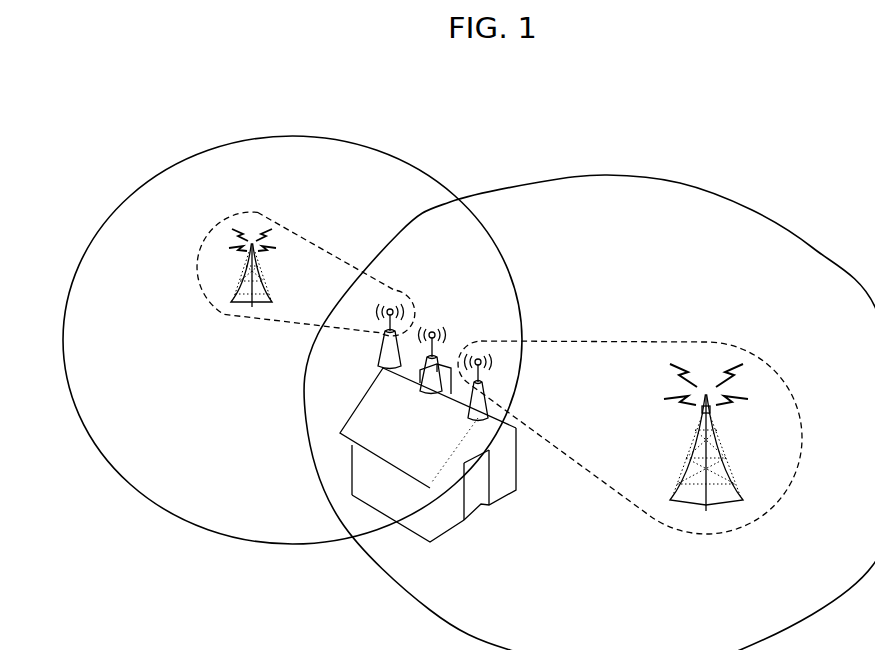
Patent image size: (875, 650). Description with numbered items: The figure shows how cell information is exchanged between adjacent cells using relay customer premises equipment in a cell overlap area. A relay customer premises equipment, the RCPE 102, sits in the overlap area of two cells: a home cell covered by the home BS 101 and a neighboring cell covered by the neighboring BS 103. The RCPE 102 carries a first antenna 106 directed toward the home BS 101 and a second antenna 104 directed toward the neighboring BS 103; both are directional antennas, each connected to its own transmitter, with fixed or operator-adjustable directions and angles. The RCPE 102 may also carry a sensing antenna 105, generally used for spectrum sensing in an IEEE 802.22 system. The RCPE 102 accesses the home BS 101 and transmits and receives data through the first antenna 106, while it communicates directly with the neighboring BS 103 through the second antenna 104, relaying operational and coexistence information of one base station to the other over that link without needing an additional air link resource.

The home BS 101 is at (712, 465).
The relay customer premises equipment (RCPE) 102 is at (442, 464).
The neighboring BS 103 is at (230, 303).
The second antenna 104 is at (392, 302).
The sensing antenna 105 is at (435, 323).
The first antenna 106 is at (486, 350).